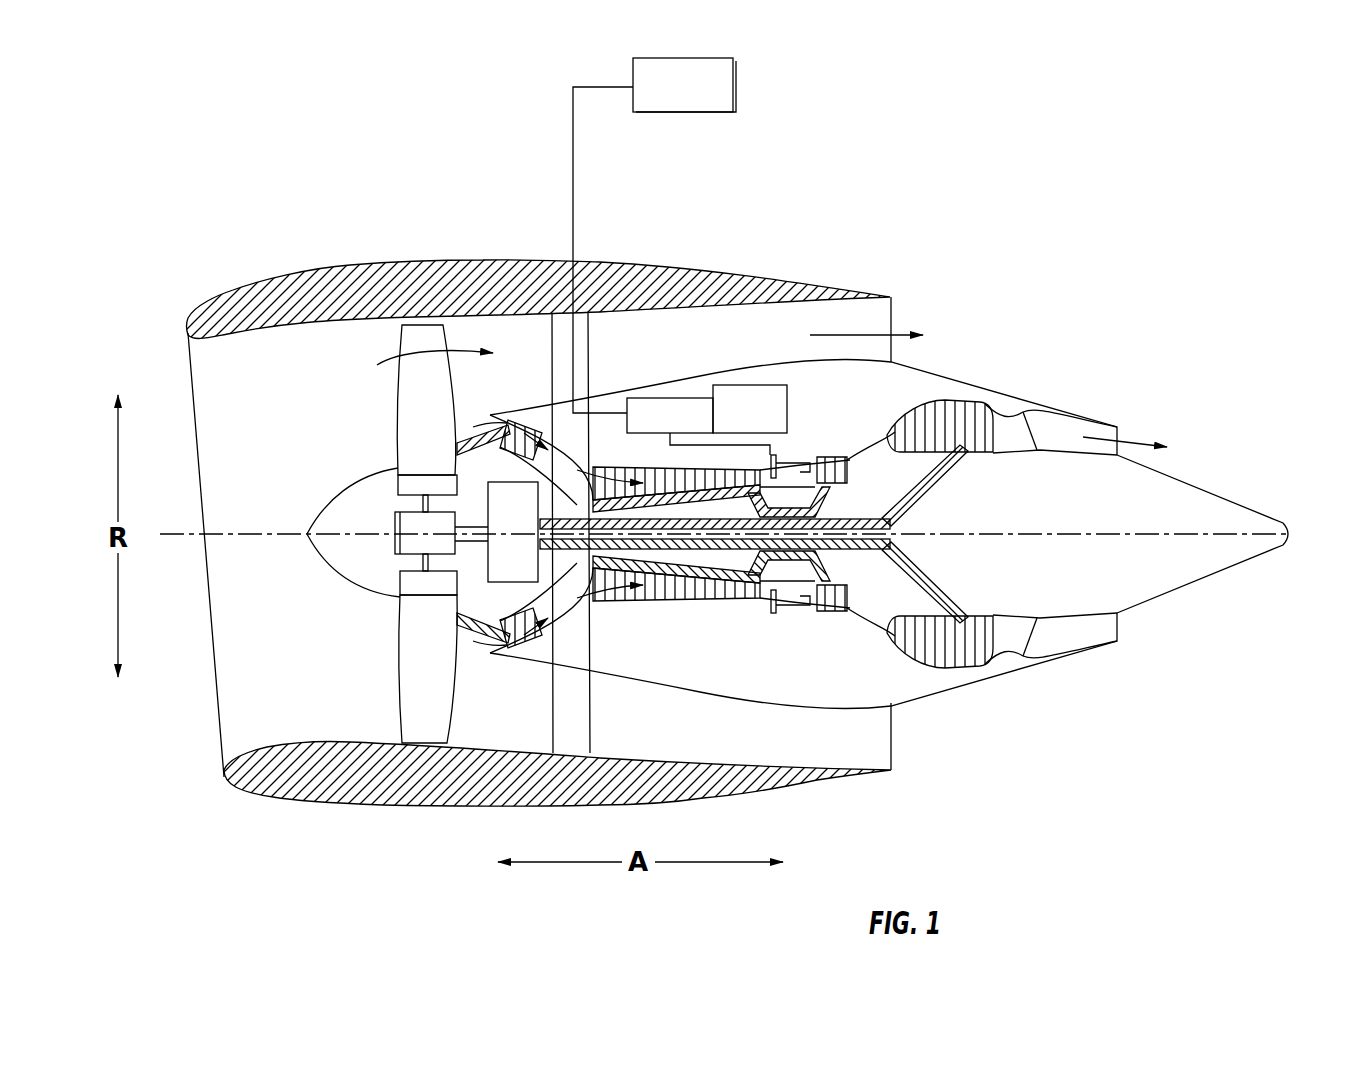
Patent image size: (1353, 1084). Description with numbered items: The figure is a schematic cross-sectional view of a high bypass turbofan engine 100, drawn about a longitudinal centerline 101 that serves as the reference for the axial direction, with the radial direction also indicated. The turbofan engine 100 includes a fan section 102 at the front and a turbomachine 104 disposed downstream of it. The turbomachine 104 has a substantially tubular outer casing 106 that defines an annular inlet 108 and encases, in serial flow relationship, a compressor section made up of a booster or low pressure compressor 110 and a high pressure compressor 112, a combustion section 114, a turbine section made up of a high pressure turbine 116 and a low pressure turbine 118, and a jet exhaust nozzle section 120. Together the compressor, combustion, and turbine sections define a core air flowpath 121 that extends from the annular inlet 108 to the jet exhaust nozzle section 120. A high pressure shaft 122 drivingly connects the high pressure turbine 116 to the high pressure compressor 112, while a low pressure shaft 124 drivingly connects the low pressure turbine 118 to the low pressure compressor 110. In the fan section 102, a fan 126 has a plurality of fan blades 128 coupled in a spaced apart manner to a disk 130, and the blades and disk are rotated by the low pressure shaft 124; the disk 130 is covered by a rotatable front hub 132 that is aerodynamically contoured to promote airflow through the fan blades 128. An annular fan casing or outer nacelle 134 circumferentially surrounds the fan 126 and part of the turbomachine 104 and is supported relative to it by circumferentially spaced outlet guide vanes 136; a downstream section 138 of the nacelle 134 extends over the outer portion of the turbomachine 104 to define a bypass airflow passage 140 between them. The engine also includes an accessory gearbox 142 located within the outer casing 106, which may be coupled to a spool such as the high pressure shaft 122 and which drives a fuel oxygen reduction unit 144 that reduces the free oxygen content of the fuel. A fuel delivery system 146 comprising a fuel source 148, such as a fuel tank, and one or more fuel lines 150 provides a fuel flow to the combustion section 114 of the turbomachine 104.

The turbofan engine 100 is at (1036, 272).
The longitudinal centerline 101 is at (1103, 532).
The fan section 102 is at (357, 340).
The turbomachine 104 is at (702, 353).
The outer casing 106 is at (746, 706).
The annular inlet 108 is at (507, 636).
The low pressure compressor 110 is at (535, 656).
The high pressure compressor 112 is at (618, 590).
The combustion section 114 is at (790, 598).
The high pressure turbine 116 is at (852, 603).
The low pressure turbine 118 is at (972, 663).
The jet exhaust nozzle section 120 is at (1030, 634).
The core air flowpath 121 is at (572, 605).
The high pressure shaft 122 is at (792, 500).
The low pressure shaft 124 is at (847, 517).
The fan 126 is at (362, 428).
The fan blades 128 is at (398, 686).
The disk 130 is at (410, 484).
The front hub 132 is at (306, 552).
The outer nacelle 134 is at (462, 807).
The outlet guide vanes 136 is at (590, 345).
The downstream section 138 is at (818, 283).
The bypass airflow passage 140 is at (742, 341).
The accessory gearbox 142 is at (733, 423).
The fuel oxygen reduction unit 144 is at (653, 429).
The fuel delivery system 146 is at (548, 130).
The fuel source 148 is at (666, 101).
The fuel lines 150 is at (575, 172).